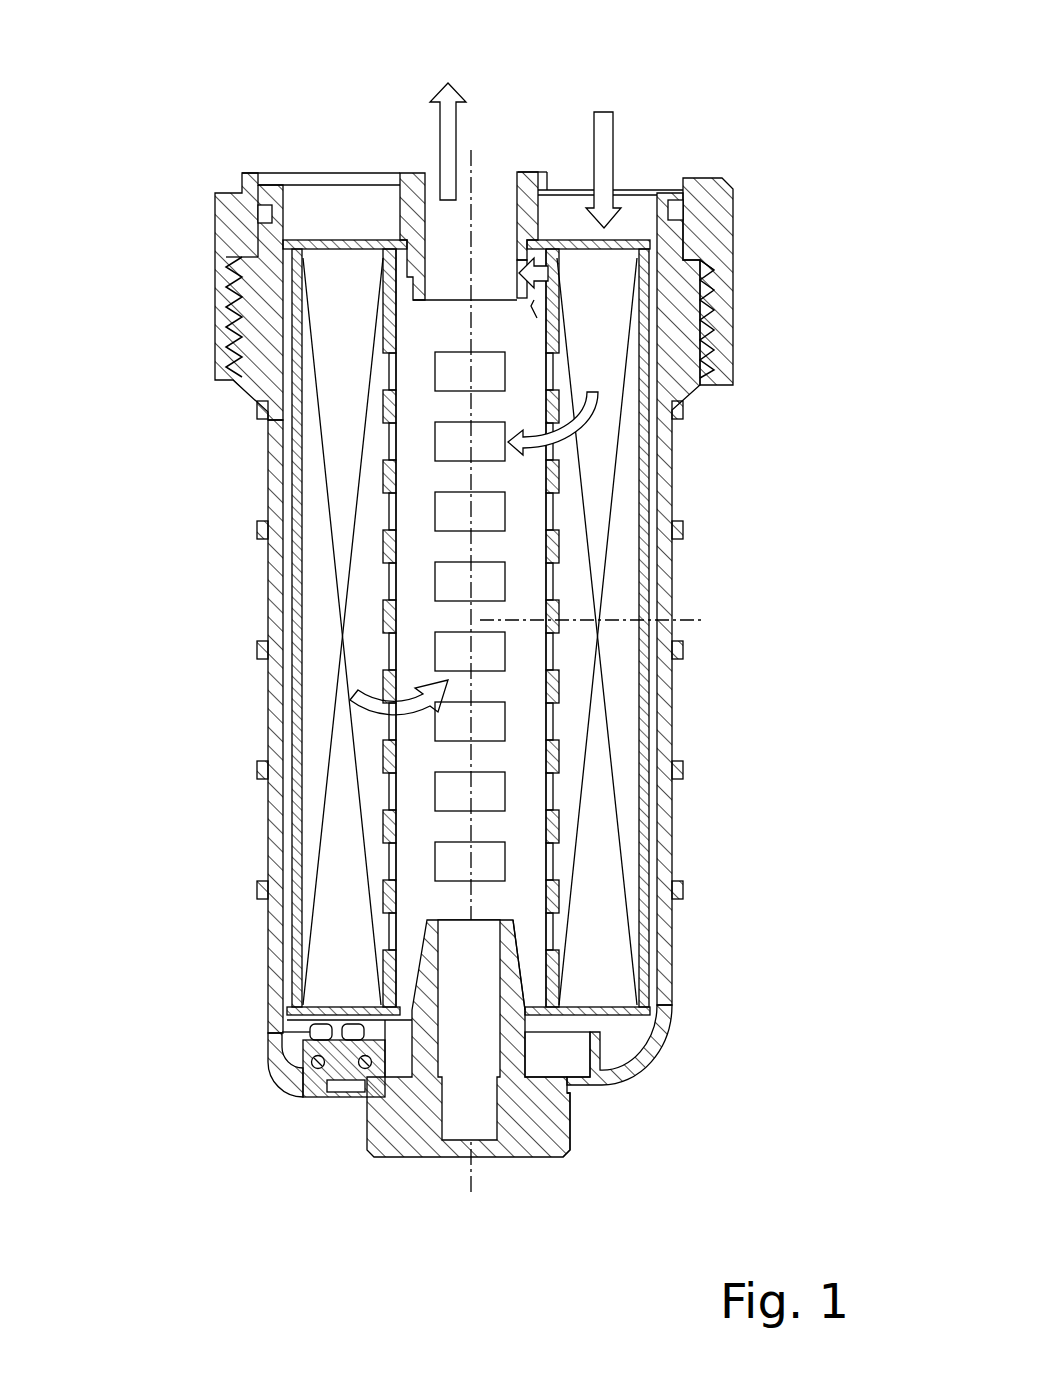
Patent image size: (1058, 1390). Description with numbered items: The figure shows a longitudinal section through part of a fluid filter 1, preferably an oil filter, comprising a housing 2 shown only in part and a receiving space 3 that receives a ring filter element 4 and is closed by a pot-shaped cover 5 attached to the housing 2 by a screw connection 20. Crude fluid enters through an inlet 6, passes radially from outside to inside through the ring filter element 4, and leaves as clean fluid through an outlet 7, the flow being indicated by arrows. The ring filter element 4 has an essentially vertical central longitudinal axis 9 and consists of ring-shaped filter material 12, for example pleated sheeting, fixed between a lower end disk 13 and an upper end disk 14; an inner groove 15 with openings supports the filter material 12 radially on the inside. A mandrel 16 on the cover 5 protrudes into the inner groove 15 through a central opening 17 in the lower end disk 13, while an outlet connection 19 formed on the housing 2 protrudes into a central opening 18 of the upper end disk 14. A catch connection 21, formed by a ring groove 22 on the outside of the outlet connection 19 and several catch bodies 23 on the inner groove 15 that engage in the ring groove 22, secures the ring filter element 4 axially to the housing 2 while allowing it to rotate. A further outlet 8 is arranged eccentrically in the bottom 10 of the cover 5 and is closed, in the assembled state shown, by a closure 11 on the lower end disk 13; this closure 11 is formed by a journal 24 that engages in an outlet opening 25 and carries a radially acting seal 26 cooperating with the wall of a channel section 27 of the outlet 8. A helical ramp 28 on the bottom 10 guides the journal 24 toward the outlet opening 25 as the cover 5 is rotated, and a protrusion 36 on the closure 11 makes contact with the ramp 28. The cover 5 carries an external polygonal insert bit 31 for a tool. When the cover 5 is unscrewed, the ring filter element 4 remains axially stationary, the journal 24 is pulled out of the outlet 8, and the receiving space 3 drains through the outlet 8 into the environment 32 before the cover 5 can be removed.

The fluid filter 1 is at (467, 645).
The housing 2 is at (197, 222).
The receiving space 3 is at (316, 210).
The ring filter element 4 is at (623, 467).
The cover 5 is at (698, 559).
The inlet 6 is at (627, 187).
The outlet 7 is at (500, 195).
The outlet 8 is at (330, 1092).
The central longitudinal axis 9 is at (603, 621).
The bottom 10 is at (630, 1078).
The closure 11 is at (390, 1056).
The filter material 12 is at (610, 415).
The lower end disk 13 is at (372, 1045).
The upper end disk 14 is at (360, 243).
The inner groove 15 is at (388, 478).
The mandrel 16 is at (515, 975).
The central opening 17 is at (427, 1013).
The central opening 18 is at (471, 222).
The outlet connection 19 is at (546, 225).
The screw connection 20 is at (722, 320).
The catch connection 21 is at (532, 318).
The ring groove 22 is at (420, 272).
The catch bodies 23 is at (548, 270).
The journal 24 is at (305, 1045).
The outlet opening 25 is at (340, 1064).
The seal 26 is at (313, 1063).
The channel section 27 is at (545, 1066).
The ramp 28 is at (573, 1024).
The polygonal insert bit 31 is at (572, 1142).
The environment 32 is at (349, 1288).
The protrusion 36 is at (350, 1093).